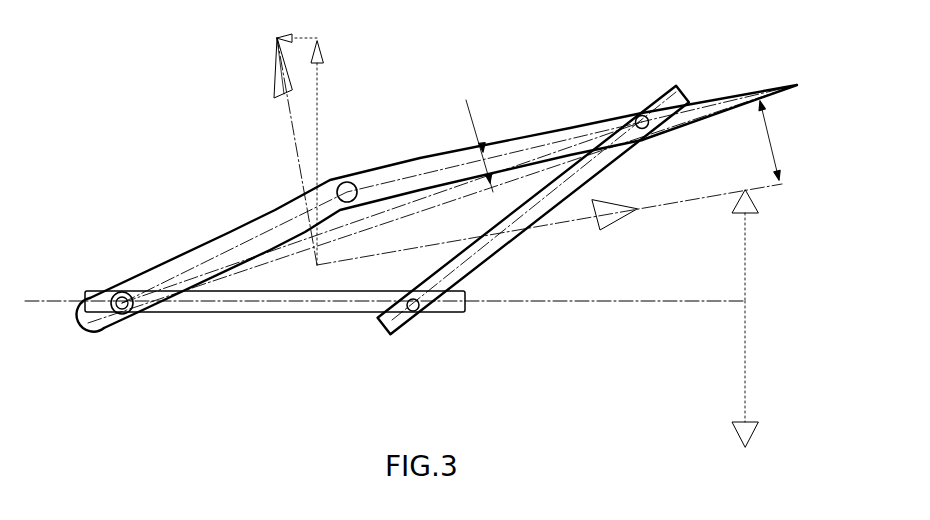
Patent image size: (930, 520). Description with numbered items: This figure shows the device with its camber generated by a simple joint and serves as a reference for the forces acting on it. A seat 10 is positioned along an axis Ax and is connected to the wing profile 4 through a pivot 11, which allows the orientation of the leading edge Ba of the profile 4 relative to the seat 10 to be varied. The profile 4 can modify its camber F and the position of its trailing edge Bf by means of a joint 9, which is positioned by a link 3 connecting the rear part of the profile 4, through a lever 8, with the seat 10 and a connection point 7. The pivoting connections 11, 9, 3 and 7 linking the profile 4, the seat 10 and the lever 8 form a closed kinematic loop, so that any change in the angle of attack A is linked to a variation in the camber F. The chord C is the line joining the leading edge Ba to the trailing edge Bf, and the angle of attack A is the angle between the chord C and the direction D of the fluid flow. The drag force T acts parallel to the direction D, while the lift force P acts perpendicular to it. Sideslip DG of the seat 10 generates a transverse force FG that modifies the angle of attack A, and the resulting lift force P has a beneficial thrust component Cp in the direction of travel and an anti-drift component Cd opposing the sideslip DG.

The link 3 is at (638, 117).
The profile 4 is at (188, 263).
The connection point 7 is at (418, 310).
The lever 8 is at (480, 250).
The joint 9 is at (356, 182).
The seat 10 is at (235, 308).
The pivot 11 is at (120, 294).
The leading edge Ba is at (82, 330).
The trailing edge Bf is at (790, 84).
The lift force P is at (283, 151).
The thrust component Cp is at (306, 36).
The anti-drift component Cd is at (320, 111).
The chord C is at (287, 258).
The camber F is at (485, 139).
The drag force T is at (549, 224).
The direction of the fluid D is at (718, 197).
The transverse force FG is at (810, 254).
The sideslip DG is at (815, 398).
The axis Ax is at (723, 304).
The angle of attack A is at (785, 140).